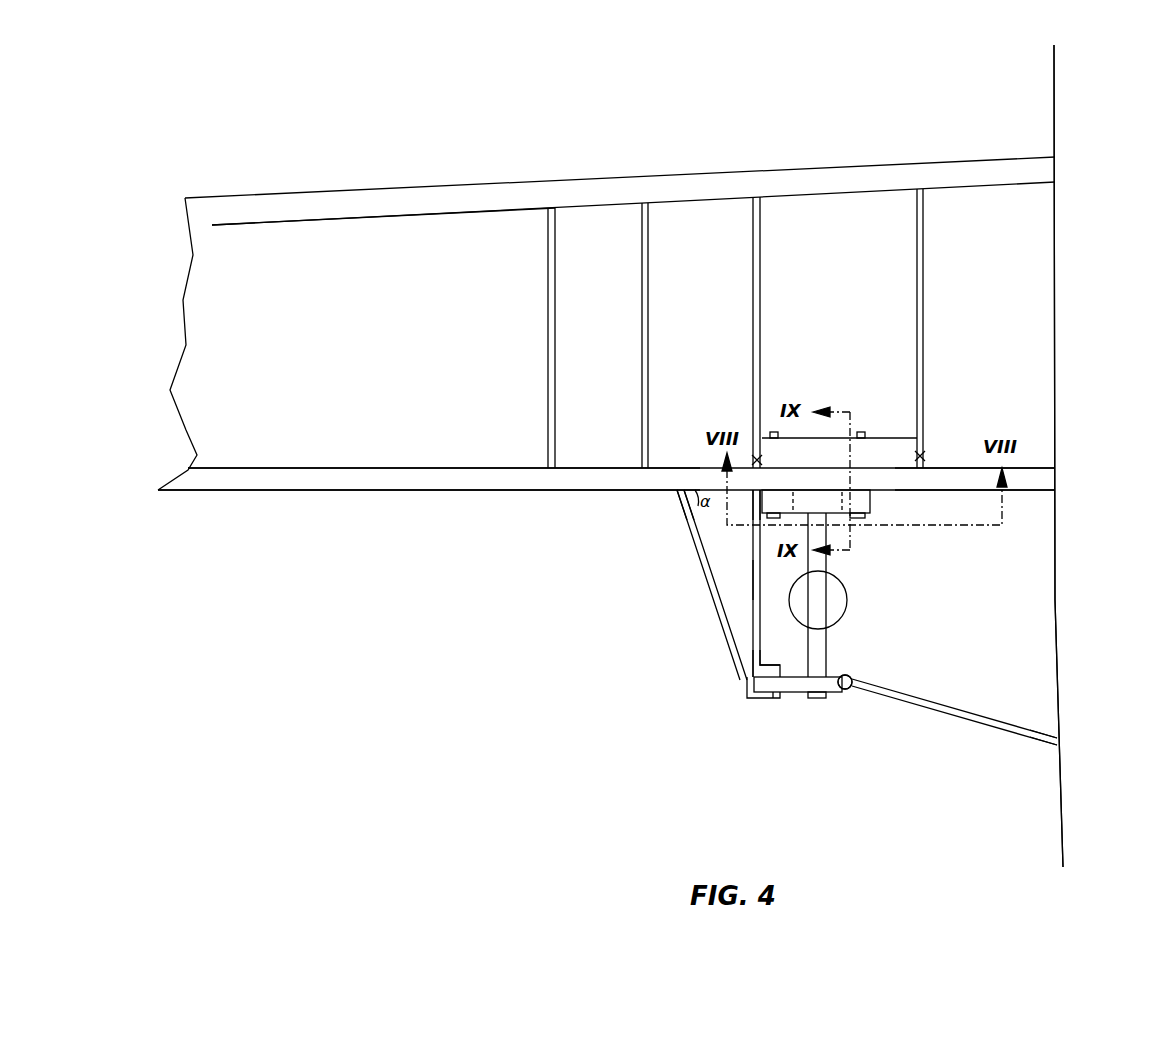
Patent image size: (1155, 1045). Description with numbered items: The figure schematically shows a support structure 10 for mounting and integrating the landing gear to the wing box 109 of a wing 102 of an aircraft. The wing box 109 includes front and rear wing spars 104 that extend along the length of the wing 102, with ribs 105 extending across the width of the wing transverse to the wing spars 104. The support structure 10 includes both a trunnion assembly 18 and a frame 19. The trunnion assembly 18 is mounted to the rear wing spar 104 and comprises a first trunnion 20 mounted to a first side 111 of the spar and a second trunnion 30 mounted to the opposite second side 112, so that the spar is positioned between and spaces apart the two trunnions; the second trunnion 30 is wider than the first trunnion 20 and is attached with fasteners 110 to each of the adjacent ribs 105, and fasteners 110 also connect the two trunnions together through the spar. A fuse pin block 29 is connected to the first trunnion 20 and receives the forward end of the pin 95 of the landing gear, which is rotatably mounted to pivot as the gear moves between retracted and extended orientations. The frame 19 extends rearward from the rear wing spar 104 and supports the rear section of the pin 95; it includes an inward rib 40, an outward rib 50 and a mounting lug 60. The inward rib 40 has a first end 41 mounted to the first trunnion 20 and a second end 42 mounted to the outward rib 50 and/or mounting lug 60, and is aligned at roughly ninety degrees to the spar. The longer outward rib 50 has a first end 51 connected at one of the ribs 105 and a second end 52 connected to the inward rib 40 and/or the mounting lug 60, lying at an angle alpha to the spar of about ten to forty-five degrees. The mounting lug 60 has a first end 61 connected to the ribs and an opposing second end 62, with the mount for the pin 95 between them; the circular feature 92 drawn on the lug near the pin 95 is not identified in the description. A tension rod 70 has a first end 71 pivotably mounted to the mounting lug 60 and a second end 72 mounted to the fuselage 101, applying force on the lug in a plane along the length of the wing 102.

The support structure 10 is at (1024, 547).
The trunnion assembly 18 is at (908, 478).
The frame 19 is at (656, 651).
The first trunnion 20 is at (866, 500).
The fuse pin block 29 is at (820, 500).
The second trunnion 30 is at (875, 458).
The inward rib 40 is at (757, 588).
The first end of inward rib 41 is at (752, 497).
The second end of inward rib 42 is at (755, 667).
The outward rib 50 is at (702, 557).
The first end of outward rib 51 is at (683, 503).
The second end of outward rib 52 is at (749, 681).
The mounting lug 60 is at (820, 693).
The first end of mounting lug 61 is at (777, 698).
The second end of mounting lug 62 is at (832, 678).
The tension rod 70 is at (942, 713).
The first end of tension rod 71 is at (850, 689).
The second end of tension rod 72 is at (1043, 738).
The aperture 92 is at (842, 612).
The pin 95 is at (822, 562).
The fuselage 101 is at (1063, 800).
The wing 102 is at (250, 196).
The wing spar 104 is at (448, 200).
The ribs 105 is at (650, 253).
The wing box 109 is at (388, 270).
The fasteners 110 is at (758, 455).
The first side of wing spar 111 is at (305, 491).
The second side of wing spar 112 is at (325, 468).